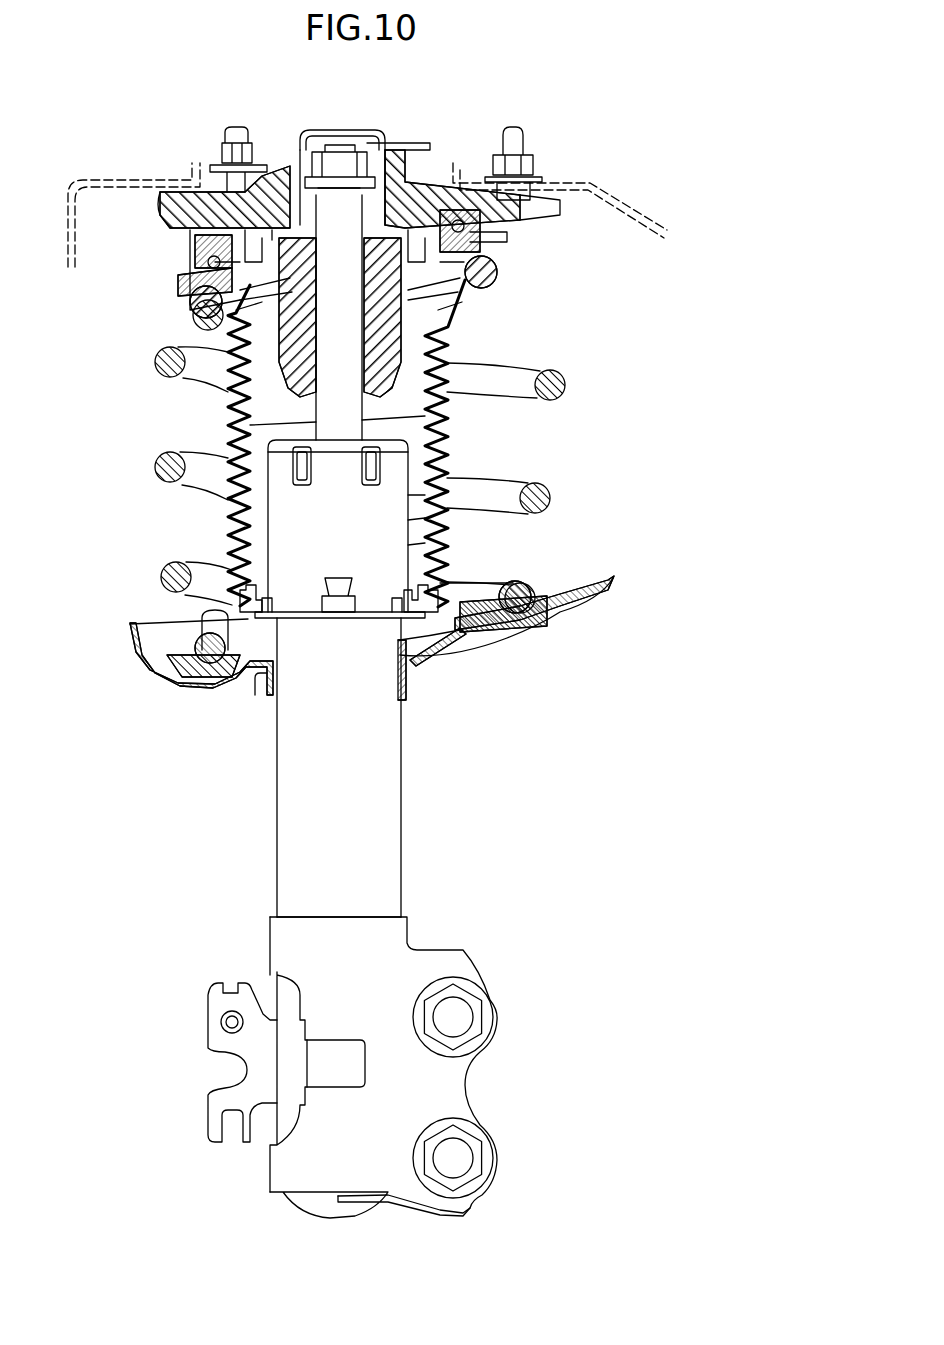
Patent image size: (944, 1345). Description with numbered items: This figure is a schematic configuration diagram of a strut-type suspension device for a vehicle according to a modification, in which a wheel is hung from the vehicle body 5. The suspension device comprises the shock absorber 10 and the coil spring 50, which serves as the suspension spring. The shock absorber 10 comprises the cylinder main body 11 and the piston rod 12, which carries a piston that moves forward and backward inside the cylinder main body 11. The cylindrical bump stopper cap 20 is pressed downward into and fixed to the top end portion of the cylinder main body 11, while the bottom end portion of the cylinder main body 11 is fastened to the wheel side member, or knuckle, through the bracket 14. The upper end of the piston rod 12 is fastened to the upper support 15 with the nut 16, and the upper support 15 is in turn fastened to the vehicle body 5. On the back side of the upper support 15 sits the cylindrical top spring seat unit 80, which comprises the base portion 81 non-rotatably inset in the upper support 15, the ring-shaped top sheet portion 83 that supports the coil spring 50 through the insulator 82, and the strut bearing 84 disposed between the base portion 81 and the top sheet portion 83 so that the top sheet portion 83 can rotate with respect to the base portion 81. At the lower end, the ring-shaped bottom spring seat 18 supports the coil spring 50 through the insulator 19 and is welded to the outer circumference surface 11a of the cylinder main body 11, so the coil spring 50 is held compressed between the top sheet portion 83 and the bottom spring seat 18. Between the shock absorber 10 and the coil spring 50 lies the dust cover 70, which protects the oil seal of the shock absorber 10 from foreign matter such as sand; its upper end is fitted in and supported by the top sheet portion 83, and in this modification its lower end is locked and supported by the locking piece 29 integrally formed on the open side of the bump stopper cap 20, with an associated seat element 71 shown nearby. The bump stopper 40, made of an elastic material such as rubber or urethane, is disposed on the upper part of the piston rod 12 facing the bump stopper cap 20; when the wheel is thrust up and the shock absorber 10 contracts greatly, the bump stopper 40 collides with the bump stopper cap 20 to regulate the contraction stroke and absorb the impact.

The vehicle body 5 is at (648, 215).
The shock absorber 10 is at (425, 782).
The cylinder main body 11 is at (401, 838).
The outer circumference surface 11a is at (401, 727).
The piston rod 12 is at (366, 413).
The bracket 14 is at (470, 945).
The upper support 15 is at (418, 143).
The nut 16 is at (340, 160).
The bottom spring seat 18 is at (600, 603).
The insulator 19 is at (530, 590).
The bump stopper cap 20 is at (410, 493).
The locking piece 29 is at (337, 576).
The bump stopper 40 is at (448, 328).
The coil spring 50 is at (572, 500).
The dust cover 70 is at (228, 410).
The spring seat 71 is at (240, 580).
The top spring seat unit 80 is at (100, 282).
The base portion 81 is at (195, 247).
The insulator 82 is at (190, 298).
The top sheet portion 83 is at (188, 274).
The strut bearing 84 is at (498, 238).